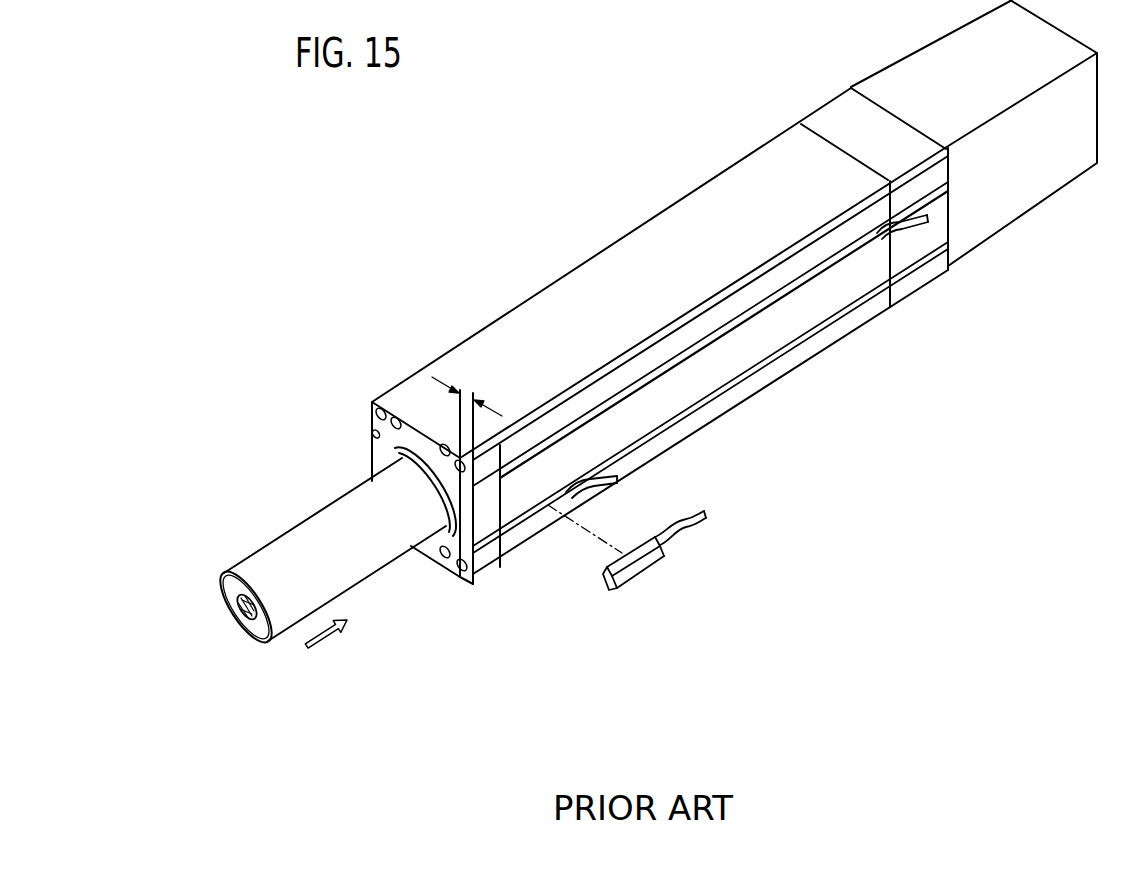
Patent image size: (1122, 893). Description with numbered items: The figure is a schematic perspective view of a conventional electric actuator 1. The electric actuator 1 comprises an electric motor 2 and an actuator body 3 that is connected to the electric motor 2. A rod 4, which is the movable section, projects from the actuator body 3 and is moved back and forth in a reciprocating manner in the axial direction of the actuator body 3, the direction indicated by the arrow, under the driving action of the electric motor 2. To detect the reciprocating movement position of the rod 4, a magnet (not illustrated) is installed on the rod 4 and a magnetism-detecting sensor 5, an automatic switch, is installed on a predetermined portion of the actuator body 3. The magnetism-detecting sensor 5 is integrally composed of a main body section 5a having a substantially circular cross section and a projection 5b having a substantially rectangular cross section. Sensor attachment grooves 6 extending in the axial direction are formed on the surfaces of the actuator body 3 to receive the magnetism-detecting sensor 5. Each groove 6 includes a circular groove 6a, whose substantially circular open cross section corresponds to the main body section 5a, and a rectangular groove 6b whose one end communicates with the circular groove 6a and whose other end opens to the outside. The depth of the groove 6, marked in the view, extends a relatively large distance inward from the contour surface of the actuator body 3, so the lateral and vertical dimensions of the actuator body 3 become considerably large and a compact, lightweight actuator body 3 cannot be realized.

The electric actuator 1 is at (638, 116).
The electric motor 2 is at (920, 75).
The actuator body 3 is at (855, 335).
The rod 4 is at (383, 548).
The magnetism-detecting sensor 5 is at (664, 565).
The main body section 5a is at (607, 585).
The projection 5b is at (627, 579).
The sensor attachment groove 6 is at (747, 384).
The circular groove 6a is at (462, 582).
The rectangular groove 6b is at (483, 584).